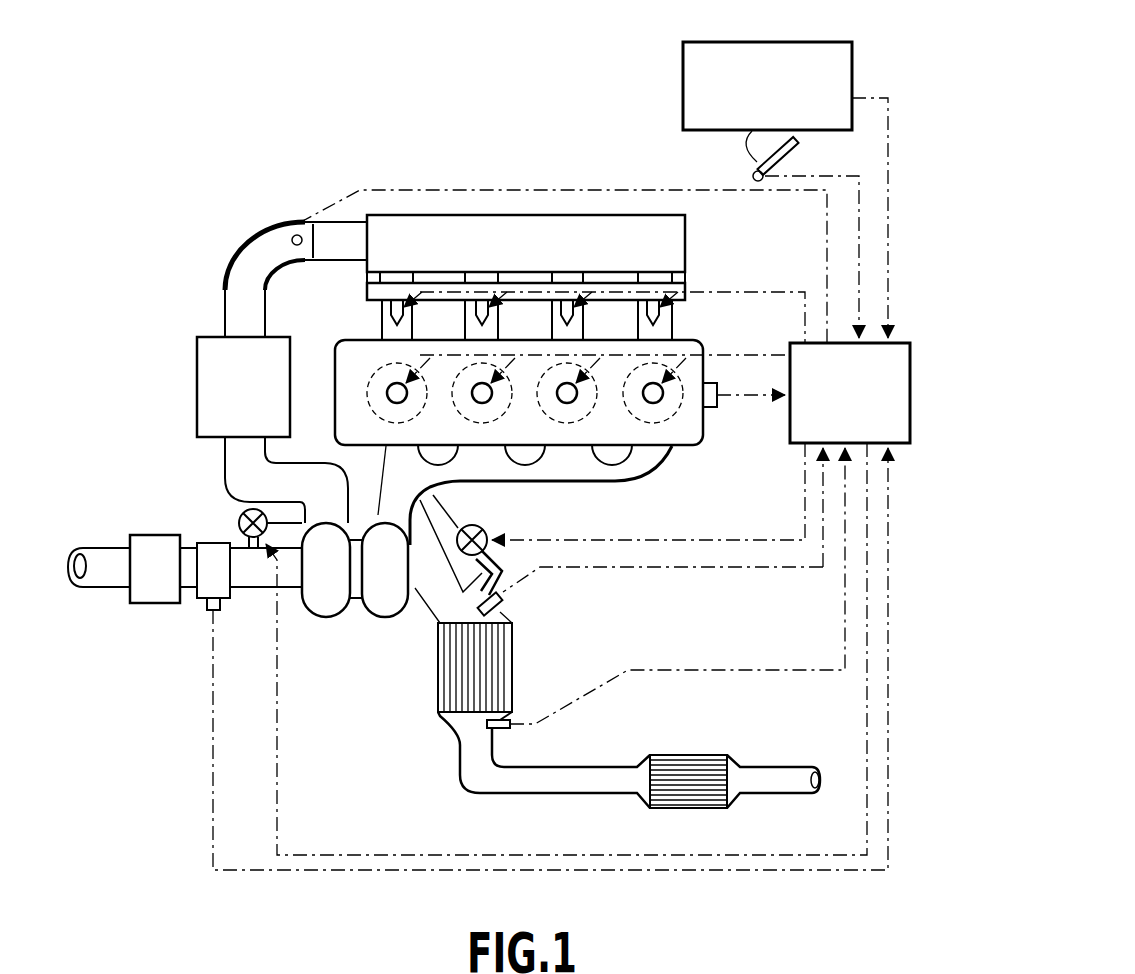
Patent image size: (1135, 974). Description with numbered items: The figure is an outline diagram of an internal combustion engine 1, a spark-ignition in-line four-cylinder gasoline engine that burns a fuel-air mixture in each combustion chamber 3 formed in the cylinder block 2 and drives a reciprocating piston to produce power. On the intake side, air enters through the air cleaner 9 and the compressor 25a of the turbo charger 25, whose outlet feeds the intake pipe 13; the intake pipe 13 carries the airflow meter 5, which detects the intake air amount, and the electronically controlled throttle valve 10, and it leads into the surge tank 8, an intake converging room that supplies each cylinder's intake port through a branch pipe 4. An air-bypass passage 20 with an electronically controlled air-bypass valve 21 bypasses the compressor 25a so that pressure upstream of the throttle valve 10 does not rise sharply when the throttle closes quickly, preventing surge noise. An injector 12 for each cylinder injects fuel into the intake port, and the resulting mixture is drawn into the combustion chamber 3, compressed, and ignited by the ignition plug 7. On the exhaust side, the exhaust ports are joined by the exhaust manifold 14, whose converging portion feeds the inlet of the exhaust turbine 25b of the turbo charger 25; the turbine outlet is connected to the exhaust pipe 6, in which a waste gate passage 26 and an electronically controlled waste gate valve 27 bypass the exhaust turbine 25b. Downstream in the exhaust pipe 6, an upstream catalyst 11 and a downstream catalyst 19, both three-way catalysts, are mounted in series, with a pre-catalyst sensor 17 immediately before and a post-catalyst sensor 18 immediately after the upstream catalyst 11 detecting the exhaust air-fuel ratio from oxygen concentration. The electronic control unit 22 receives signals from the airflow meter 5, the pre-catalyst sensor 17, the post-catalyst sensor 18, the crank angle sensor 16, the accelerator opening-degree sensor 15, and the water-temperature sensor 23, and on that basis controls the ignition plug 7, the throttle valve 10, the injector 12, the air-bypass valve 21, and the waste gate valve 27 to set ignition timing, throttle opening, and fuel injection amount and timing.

The internal combustion engine 1 is at (555, 152).
The cylinder block 2 is at (704, 346).
The combustion chamber 3 is at (367, 402).
The branch pipe 4 is at (674, 321).
The airflow meter 5 is at (200, 592).
The exhaust pipe 6 is at (430, 596).
The ignition plug 7 is at (392, 388).
The surge tank 8 is at (440, 214).
The air cleaner 9 is at (155, 534).
The throttle valve 10 is at (294, 220).
The upstream catalyst 11 is at (200, 393).
The injector 12 is at (390, 308).
The intake pipe 13 is at (236, 318).
The exhaust manifold 14 is at (578, 483).
The accelerator opening-degree sensor 15 is at (756, 169).
The crank angle sensor 16 is at (717, 391).
The pre-catalyst sensor 17 is at (505, 606).
The post-catalyst sensor 18 is at (510, 729).
The downstream catalyst 19 is at (685, 755).
The air-bypass passage 20 is at (268, 503).
The air-bypass valve 21 is at (240, 521).
The electronic control unit 22 is at (790, 426).
The water-temperature sensor 23 is at (683, 96).
The turbo charger 25 is at (352, 574).
The compressor 25a is at (321, 618).
The exhaust turbine 25b is at (387, 618).
The waste gate passage 26 is at (437, 498).
The waste gate valve 27 is at (488, 536).